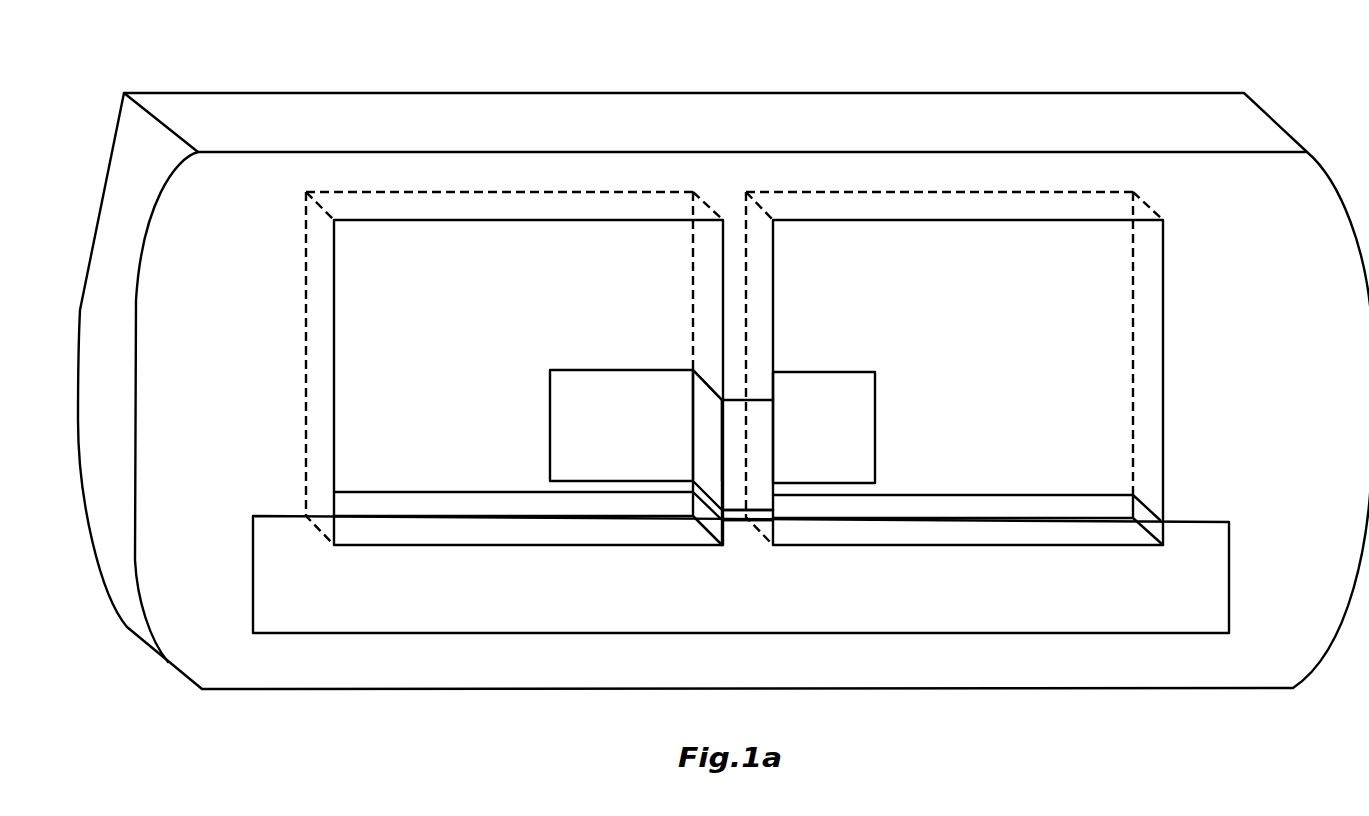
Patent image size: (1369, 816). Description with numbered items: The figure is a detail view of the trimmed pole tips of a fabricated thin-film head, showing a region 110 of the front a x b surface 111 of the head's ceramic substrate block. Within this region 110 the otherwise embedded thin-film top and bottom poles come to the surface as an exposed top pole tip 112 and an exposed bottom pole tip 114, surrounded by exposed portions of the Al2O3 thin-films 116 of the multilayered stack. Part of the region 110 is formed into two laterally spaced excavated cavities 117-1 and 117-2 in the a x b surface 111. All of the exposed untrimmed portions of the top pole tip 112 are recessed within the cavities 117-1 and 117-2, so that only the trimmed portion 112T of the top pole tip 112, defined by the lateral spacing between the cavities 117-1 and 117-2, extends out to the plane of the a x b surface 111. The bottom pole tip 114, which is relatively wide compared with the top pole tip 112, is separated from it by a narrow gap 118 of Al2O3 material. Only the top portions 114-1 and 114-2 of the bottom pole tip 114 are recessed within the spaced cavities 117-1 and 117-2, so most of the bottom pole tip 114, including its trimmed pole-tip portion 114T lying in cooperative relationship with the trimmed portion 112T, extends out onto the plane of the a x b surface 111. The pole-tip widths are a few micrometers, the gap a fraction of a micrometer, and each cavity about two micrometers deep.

The region 110 is at (749, 58).
The a x b surface 111 is at (723, 391).
The top pole tip 112 is at (565, 368).
The trimmed portion of top pole tip 112T is at (700, 428).
The bottom pole tip 114 is at (1217, 523).
The top portion of bottom pole tip 114-1 is at (463, 492).
The top portion of bottom pole tip 114-2 is at (952, 493).
The trimmed pole-tip portion 114T is at (708, 520).
The Al2O3 thin-films 116 is at (748, 353).
The excavated cavity 117-1 is at (568, 205).
The excavated cavity 117-2 is at (978, 205).
The narrow gap 118 is at (728, 520).